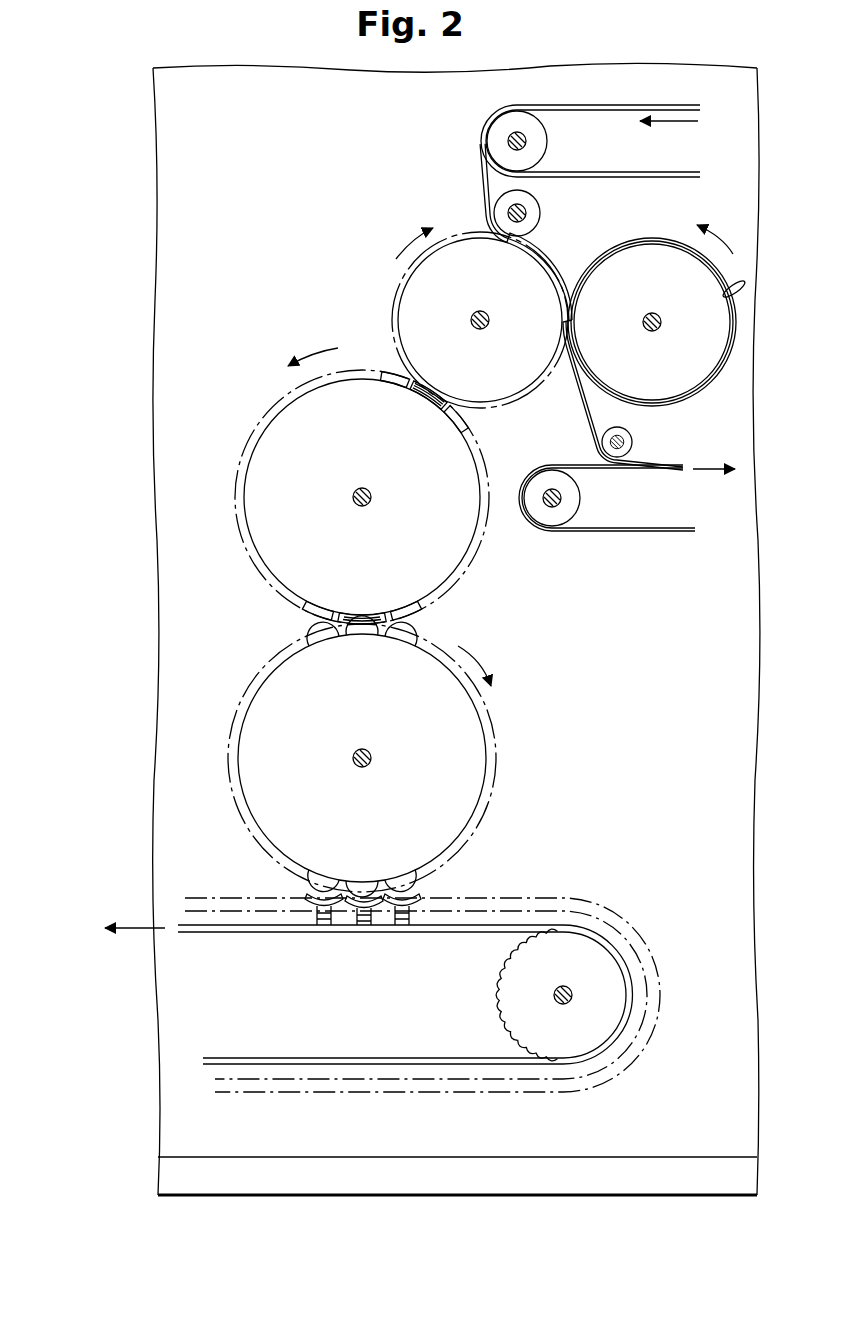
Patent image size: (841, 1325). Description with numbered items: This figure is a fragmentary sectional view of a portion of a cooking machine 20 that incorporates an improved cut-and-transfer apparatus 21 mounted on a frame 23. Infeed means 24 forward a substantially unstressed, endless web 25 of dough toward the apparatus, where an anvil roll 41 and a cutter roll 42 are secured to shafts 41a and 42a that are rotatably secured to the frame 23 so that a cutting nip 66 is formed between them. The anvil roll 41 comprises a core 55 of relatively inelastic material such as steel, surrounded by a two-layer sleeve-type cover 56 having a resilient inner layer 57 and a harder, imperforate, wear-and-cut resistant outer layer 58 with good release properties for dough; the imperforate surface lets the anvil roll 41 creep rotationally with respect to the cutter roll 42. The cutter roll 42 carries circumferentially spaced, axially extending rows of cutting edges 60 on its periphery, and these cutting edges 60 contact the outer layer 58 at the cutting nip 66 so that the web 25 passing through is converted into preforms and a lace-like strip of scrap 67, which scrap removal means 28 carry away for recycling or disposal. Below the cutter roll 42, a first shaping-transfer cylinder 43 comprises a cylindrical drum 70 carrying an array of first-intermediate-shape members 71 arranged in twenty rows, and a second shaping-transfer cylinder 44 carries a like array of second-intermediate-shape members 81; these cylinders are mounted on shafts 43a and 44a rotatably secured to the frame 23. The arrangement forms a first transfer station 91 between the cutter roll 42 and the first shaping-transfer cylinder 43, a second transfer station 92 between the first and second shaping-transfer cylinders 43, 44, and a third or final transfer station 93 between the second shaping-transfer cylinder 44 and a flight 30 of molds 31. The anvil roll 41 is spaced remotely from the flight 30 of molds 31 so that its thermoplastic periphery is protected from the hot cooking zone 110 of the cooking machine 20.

The cooking machine 20 is at (100, 1100).
The cut-and-transfer apparatus 21 is at (138, 356).
The frame 23 is at (222, 185).
The infeed means 24 is at (468, 121).
The web 25 is at (602, 104).
The scrap removal means 28 is at (612, 535).
The flight of molds 30 is at (396, 937).
The molds 31 is at (318, 906).
The anvil roll 41 is at (697, 367).
The shaft 41a is at (645, 331).
The cutter roll 42 is at (423, 282).
The shaft 42a is at (488, 327).
The first shaping-transfer cylinder 43 is at (265, 470).
The shaft 43a is at (368, 503).
The second shaping-transfer cylinder 44 is at (265, 712).
The shaft 44a is at (372, 762).
The core 55 is at (597, 303).
The cover 56 is at (663, 405).
The inner layer 57 is at (696, 250).
The outer layer 58 is at (727, 293).
The cutting edges 60 is at (397, 330).
The cutting nip 66 is at (568, 276).
The strip of scrap 67 is at (582, 408).
The cylindrical drum 70 is at (294, 453).
The first-intermediate-shape members 71 is at (393, 372).
The second-intermediate-shape members 81 is at (400, 650).
The first transfer station 91 is at (471, 417).
The second transfer station 92 is at (300, 627).
The third transfer station 93 is at (430, 888).
The cooking zone 110 is at (560, 893).